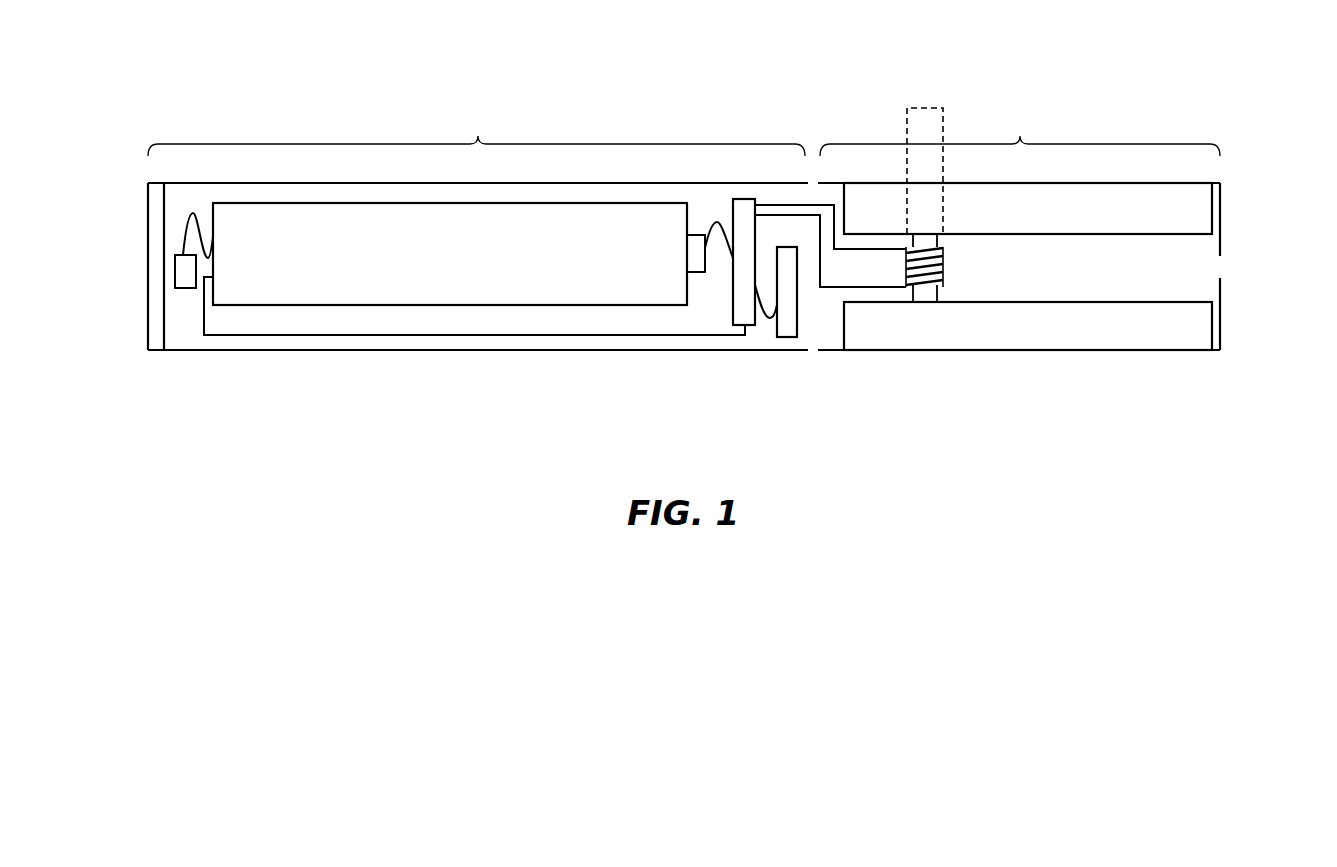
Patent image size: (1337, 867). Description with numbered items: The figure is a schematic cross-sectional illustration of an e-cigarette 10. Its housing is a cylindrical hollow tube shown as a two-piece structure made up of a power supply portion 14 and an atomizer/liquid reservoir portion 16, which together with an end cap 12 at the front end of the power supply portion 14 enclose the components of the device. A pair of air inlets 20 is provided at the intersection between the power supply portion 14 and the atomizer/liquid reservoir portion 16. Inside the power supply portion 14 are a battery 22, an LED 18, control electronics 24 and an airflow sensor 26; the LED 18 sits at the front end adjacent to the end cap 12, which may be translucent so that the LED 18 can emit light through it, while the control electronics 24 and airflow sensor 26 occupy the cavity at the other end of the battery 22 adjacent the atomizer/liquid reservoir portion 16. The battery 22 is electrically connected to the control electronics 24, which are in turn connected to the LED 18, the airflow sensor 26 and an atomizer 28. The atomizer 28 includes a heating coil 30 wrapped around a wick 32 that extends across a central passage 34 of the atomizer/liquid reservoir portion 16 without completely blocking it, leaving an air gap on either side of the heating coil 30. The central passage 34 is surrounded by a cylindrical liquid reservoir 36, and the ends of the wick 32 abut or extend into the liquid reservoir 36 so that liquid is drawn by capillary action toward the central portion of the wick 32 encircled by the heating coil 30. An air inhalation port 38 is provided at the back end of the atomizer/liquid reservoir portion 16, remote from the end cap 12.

The e-cigarette 10 is at (600, 55).
The end cap 12 is at (158, 333).
The power supply portion 14 is at (476, 130).
The atomizer/liquid reservoir portion 16 is at (1020, 130).
The light-emitting diode (LED) 18 is at (185, 290).
The air inlets 20 is at (812, 183).
The battery 22 is at (368, 283).
The control electronics 24 is at (745, 198).
The airflow sensor 26 is at (785, 327).
The atomizer 28 is at (921, 108).
The heating coil 30 is at (940, 285).
The wick 32 is at (933, 302).
The central passage 34 is at (1027, 282).
The cylindrical liquid reservoir 36 is at (1192, 207).
The air inhalation port 38 is at (1220, 268).